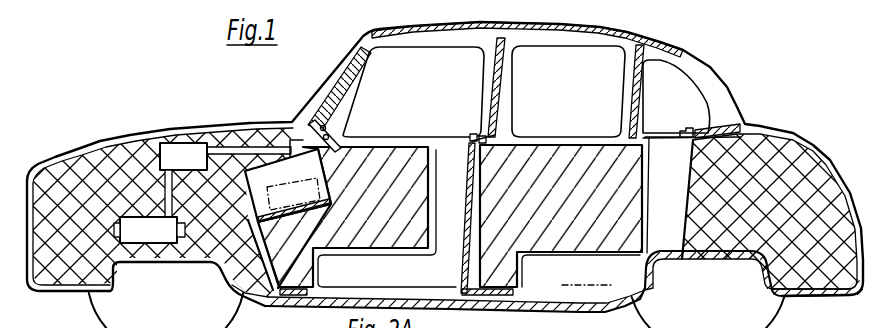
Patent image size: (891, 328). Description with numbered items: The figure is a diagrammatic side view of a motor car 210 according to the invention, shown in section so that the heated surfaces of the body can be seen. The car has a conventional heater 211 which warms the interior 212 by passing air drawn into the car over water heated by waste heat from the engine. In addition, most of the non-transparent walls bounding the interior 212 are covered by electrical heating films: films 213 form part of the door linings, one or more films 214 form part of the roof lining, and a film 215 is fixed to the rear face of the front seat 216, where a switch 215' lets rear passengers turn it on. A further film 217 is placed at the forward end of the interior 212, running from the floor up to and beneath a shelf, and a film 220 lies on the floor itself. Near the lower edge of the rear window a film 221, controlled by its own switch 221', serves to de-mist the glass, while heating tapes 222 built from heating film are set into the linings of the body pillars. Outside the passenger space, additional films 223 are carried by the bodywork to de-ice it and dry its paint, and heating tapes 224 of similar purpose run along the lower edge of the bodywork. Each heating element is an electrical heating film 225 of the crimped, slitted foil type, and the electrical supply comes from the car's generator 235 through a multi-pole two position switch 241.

The motor car 210 is at (556, 26).
The heater 211 is at (213, 248).
The interior 212 is at (403, 53).
The electrical heating films 213 is at (360, 153).
The electrical heating films 214 is at (601, 30).
The electrical heating film 215 is at (536, 219).
The switch 215' is at (506, 123).
The front seat 216 is at (445, 143).
The electrical heating film 217 is at (257, 298).
The electrical heating film 220 is at (497, 300).
The electrical heating film 221 is at (708, 116).
The switch 221' is at (710, 98).
The heating tapes 222 is at (352, 67).
The electrical heating films 223 is at (72, 262).
The heating tapes 224 is at (823, 295).
The electrical heating film 225 is at (175, 128).
The generator 235 is at (150, 236).
The multi-pole two position switch 241 is at (324, 129).